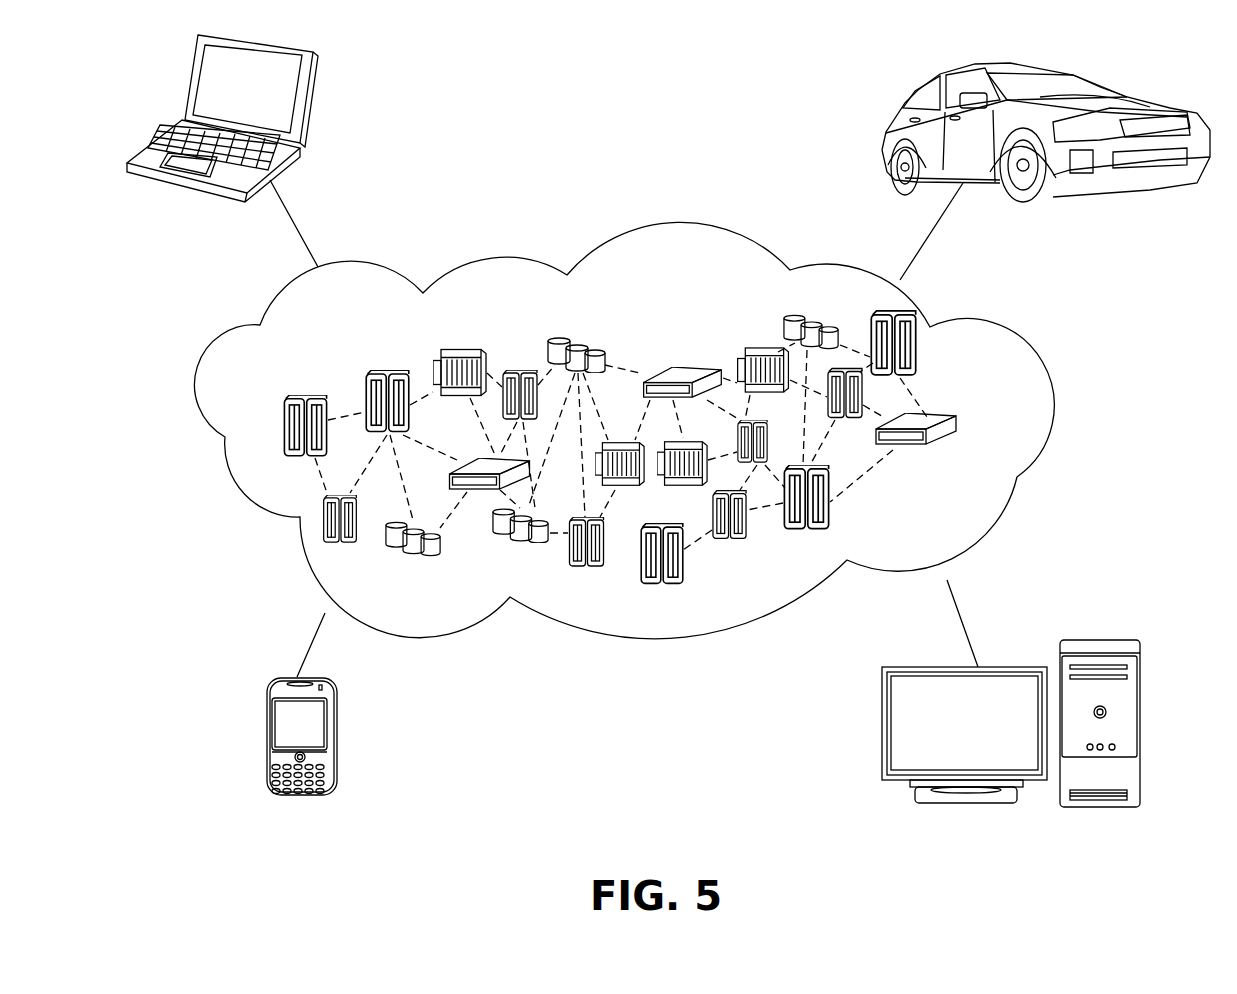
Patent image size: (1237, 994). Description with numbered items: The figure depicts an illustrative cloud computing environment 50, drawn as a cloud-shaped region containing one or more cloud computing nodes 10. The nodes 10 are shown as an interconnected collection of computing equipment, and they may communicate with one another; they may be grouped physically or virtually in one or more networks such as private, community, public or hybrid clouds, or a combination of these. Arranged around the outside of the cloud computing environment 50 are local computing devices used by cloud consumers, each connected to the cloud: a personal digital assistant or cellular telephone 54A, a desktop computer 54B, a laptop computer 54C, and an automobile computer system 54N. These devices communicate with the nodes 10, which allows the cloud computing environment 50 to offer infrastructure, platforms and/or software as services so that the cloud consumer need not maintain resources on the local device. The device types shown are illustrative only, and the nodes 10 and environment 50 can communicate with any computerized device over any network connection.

The cloud computing nodes 10 is at (997, 427).
The cloud computing environment 50 is at (1020, 340).
The personal digital assistant or cellular telephone 54A is at (270, 742).
The desktop computer 54B is at (1103, 640).
The laptop computer 54C is at (307, 107).
The automobile computer system 54N is at (897, 113).